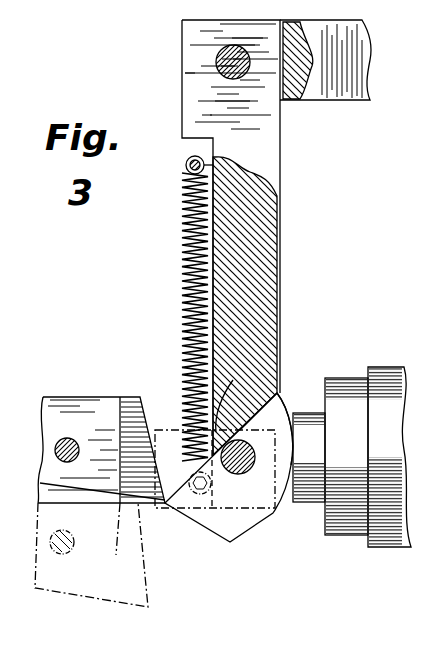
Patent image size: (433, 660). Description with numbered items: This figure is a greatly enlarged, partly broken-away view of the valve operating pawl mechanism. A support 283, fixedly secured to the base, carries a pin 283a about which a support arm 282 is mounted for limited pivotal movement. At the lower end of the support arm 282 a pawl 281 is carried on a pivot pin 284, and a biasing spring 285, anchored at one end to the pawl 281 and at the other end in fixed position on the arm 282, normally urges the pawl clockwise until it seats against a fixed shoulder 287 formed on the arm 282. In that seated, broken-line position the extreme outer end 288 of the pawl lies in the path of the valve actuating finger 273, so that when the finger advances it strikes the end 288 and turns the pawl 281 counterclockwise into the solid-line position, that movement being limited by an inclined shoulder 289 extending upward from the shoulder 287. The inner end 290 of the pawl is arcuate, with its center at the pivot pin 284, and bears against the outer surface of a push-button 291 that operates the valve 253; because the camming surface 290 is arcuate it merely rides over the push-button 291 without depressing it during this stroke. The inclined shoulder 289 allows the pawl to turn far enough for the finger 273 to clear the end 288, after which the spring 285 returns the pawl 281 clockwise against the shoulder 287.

The valve 253 is at (385, 368).
The valve actuating finger 273 is at (104, 385).
The pawl 281 is at (222, 530).
The support arm 282 is at (270, 150).
The support 283 is at (366, 62).
The pin 283a is at (216, 61).
The pivot pin 284 is at (246, 471).
The biasing spring 285 is at (181, 232).
The fixed shoulder 287 is at (234, 396).
The extreme outer end 288 is at (176, 508).
The inclined shoulder 289 is at (280, 392).
The inner end 290 is at (280, 432).
The push-button 291 is at (303, 503).